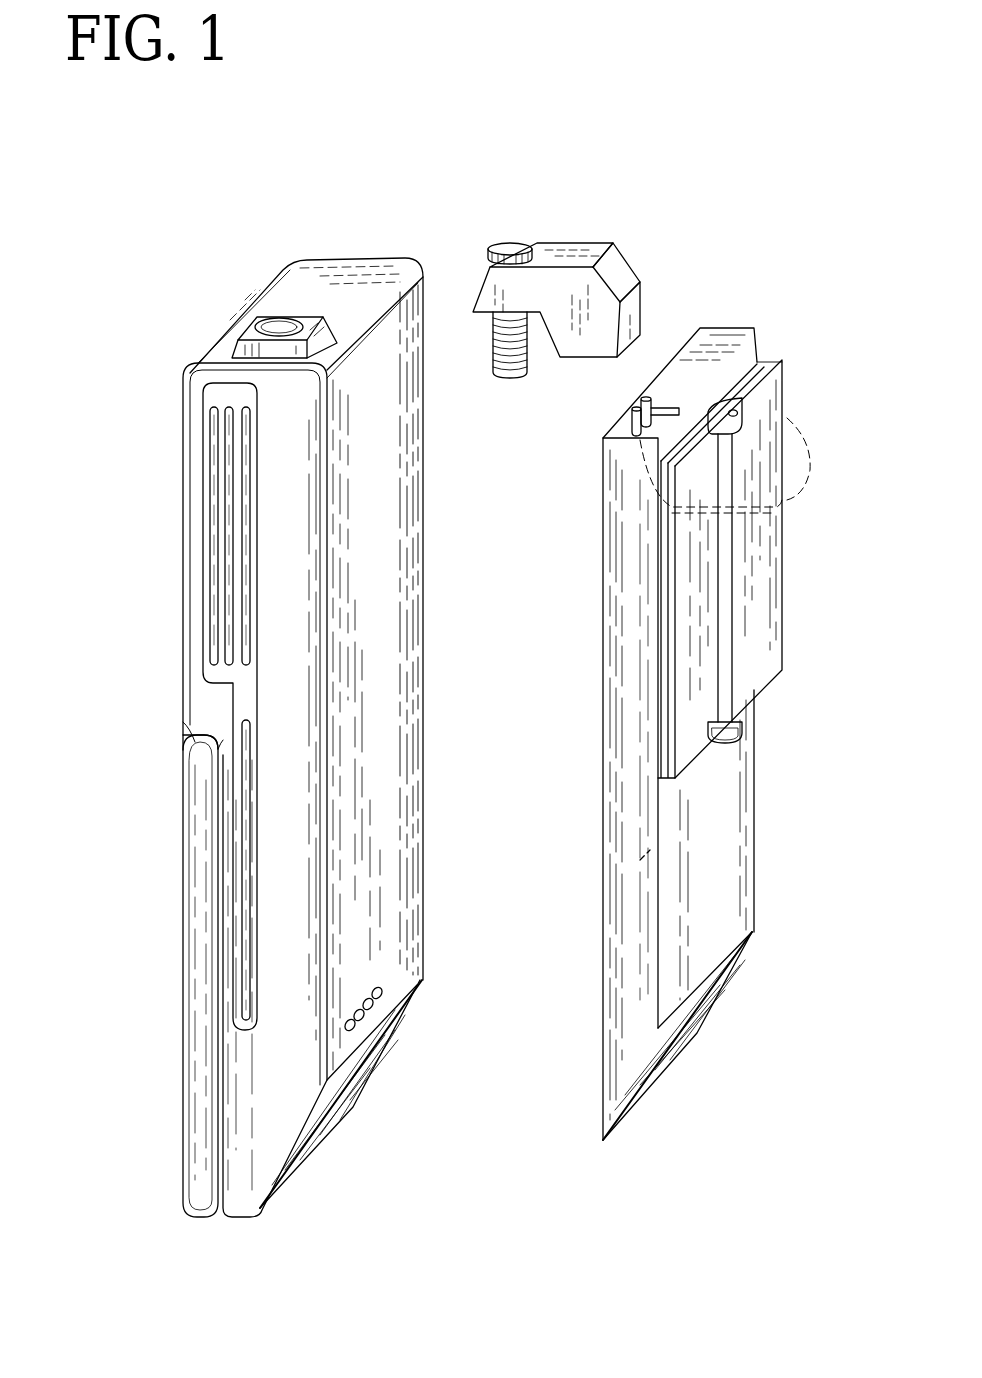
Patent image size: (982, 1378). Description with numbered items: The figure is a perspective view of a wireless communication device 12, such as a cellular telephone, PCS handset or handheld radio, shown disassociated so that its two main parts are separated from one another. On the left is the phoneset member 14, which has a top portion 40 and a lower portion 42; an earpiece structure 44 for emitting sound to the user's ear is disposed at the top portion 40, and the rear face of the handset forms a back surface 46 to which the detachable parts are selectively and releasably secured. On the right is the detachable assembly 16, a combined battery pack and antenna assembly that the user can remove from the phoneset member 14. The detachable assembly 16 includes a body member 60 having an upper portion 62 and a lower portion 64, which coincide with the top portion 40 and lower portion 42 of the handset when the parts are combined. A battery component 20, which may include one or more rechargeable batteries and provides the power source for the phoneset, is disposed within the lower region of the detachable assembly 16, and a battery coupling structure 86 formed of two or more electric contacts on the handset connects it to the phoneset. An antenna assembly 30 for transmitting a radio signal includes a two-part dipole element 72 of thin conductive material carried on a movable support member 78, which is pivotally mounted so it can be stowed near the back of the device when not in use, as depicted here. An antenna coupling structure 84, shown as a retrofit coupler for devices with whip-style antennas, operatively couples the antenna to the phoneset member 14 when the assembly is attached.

The wireless communication device 12 is at (282, 699).
The phoneset member 14 is at (250, 1078).
The detachable assembly 16 is at (635, 1020).
The battery component 20 is at (625, 862).
The antenna assembly 30 is at (757, 569).
The top portion 40 is at (378, 484).
The lower portion 42 is at (368, 900).
The earpiece structure 44 is at (180, 494).
The back surface 46 is at (380, 725).
The body member 60 is at (695, 717).
The upper portion 62 is at (750, 347).
The lower portion 64 is at (710, 877).
The dipole element 72 is at (790, 432).
The movable support member 78 is at (770, 580).
The antenna coupling structure 84 is at (577, 252).
The battery coupling structure 86 is at (382, 1000).